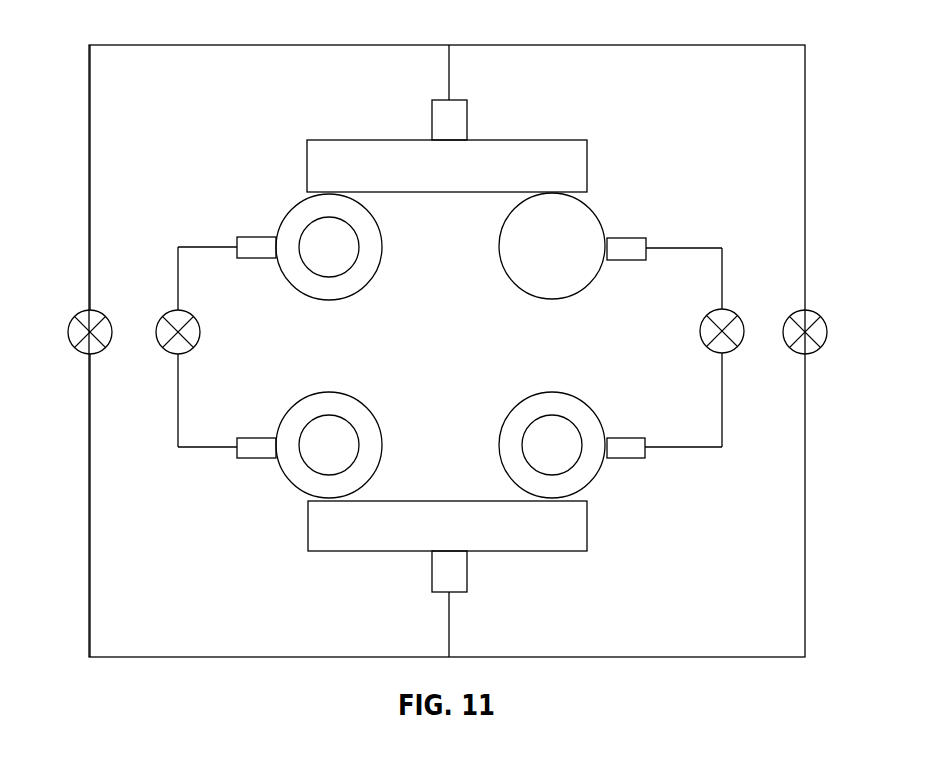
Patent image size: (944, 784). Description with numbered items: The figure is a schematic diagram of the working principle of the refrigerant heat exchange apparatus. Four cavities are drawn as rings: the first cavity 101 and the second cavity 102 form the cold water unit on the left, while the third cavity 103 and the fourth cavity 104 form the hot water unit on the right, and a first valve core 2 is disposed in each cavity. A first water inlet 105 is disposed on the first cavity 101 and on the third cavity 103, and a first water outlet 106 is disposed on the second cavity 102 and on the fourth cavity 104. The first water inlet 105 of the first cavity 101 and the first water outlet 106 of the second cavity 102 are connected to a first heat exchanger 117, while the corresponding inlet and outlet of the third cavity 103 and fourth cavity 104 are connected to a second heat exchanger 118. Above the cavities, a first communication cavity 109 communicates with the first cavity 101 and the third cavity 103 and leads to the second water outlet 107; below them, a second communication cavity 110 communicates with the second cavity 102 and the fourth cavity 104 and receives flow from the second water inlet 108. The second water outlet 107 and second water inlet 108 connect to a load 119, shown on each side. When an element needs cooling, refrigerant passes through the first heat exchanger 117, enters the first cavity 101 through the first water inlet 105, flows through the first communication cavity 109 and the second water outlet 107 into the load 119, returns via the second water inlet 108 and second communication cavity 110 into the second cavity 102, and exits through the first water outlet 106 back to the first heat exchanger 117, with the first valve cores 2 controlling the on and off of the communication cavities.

The first valve core 2 is at (360, 243).
The first cavity 101 is at (282, 216).
The second cavity 102 is at (292, 402).
The third cavity 103 is at (600, 212).
The fourth cavity 104 is at (594, 402).
The first water inlet 105 is at (237, 240).
The first water outlet 106 is at (237, 458).
The second water outlet 107 is at (432, 115).
The second water inlet 108 is at (432, 572).
The first communication cavity 109 is at (307, 150).
The second communication cavity 110 is at (308, 528).
The first heat exchanger 117 is at (200, 328).
The second heat exchanger 118 is at (700, 330).
The load 119 is at (102, 316).